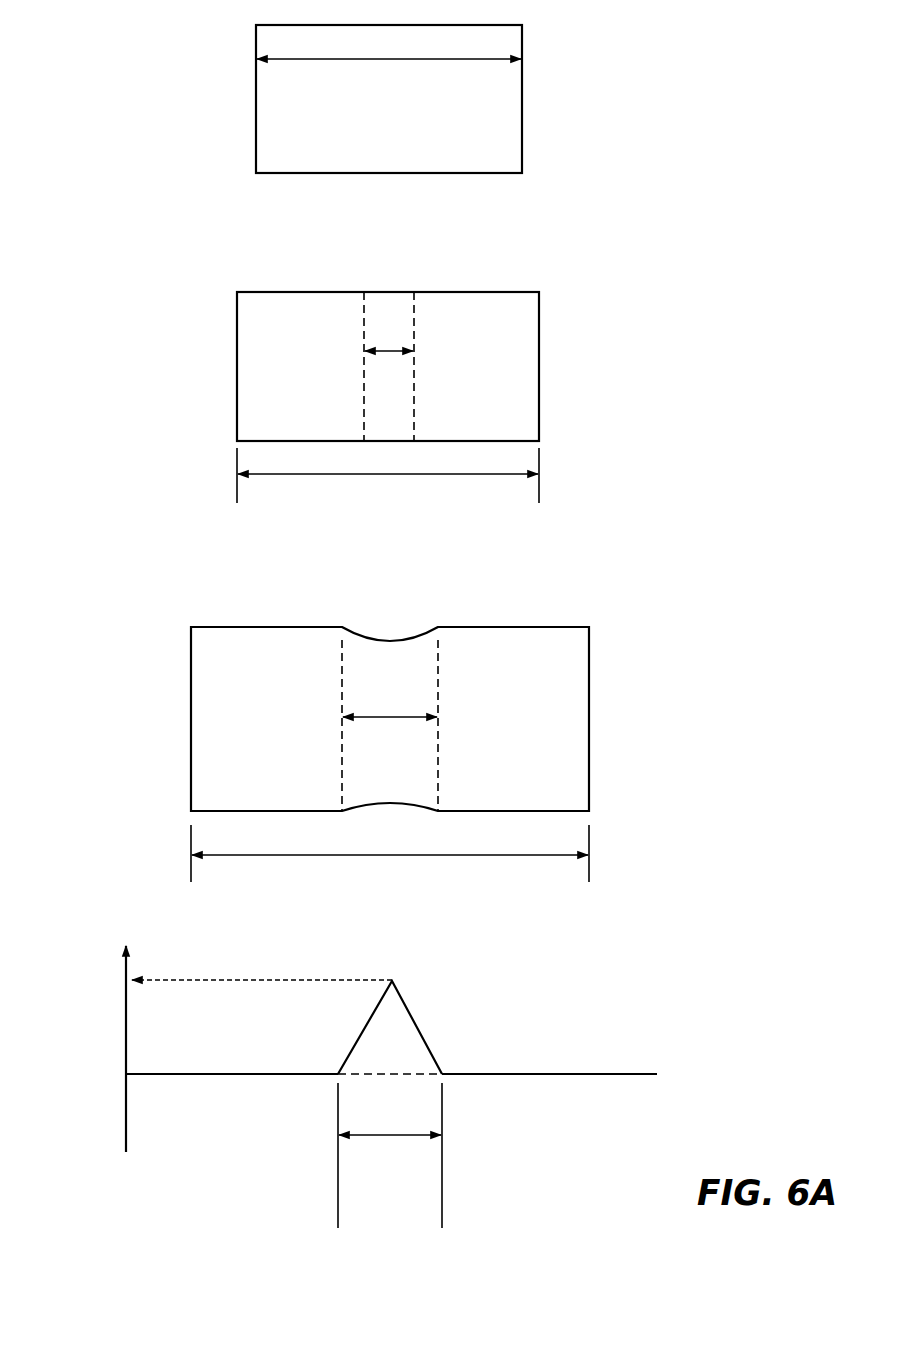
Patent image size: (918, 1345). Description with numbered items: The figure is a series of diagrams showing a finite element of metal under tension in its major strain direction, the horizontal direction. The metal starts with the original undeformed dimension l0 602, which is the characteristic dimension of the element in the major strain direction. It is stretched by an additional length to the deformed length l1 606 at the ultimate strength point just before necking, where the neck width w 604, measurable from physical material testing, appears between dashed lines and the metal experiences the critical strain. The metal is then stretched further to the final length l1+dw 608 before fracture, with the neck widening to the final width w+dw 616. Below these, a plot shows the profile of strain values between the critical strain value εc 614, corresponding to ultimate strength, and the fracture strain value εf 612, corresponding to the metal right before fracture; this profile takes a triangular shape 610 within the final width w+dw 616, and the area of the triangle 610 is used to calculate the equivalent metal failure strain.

The original undeformed dimension l0 602 is at (389, 99).
The neck width w 604 is at (389, 366).
The deformed length l1 606 is at (388, 412).
The final length l1+dw 608 is at (390, 772).
The triangular shape 610 is at (422, 1023).
The fracture strain value εf 612 is at (212, 983).
The critical strain value εc 614 is at (345, 1049).
The final width w+dw 616 is at (390, 934).